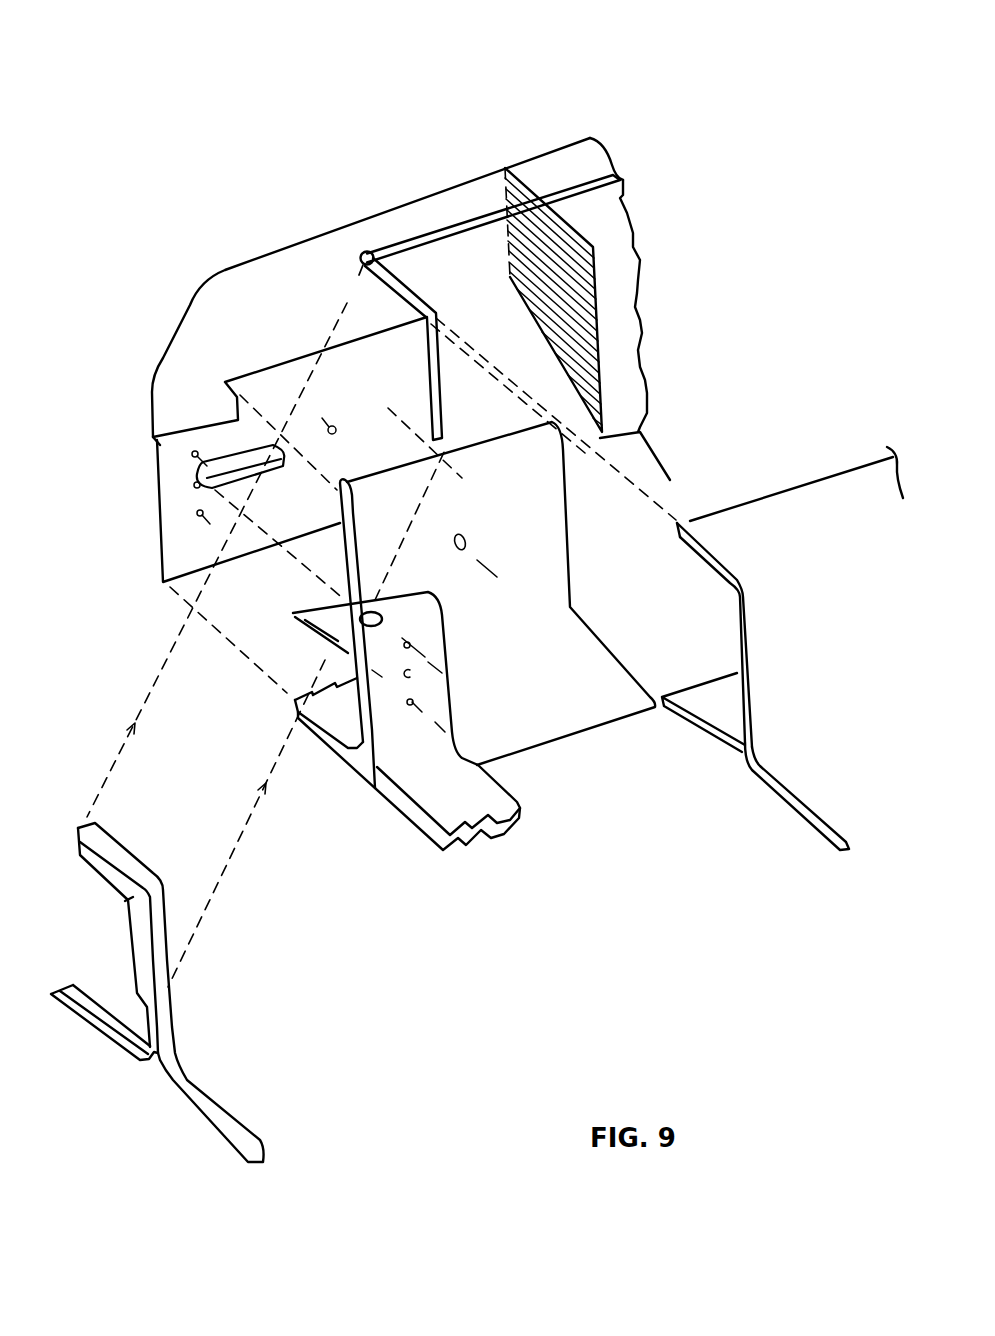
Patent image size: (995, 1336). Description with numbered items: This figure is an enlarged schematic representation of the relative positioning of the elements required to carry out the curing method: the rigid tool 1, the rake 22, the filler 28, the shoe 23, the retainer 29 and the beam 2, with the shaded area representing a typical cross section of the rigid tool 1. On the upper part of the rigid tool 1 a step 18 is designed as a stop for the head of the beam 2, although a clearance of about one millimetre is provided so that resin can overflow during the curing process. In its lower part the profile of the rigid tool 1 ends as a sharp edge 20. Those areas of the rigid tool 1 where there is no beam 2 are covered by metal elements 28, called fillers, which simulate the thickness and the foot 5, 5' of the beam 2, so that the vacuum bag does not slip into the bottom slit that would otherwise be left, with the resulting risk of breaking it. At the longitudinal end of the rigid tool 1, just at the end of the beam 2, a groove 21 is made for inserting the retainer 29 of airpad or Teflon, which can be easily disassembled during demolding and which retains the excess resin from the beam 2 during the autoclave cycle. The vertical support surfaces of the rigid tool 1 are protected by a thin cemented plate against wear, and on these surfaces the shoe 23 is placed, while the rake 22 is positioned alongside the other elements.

The rigid tool 1 is at (310, 247).
The beam 2 is at (755, 523).
The foot of the beam 5 is at (819, 858).
The foot of the beam 5' is at (708, 806).
The step 18 is at (465, 232).
The sharp edge 20 is at (670, 480).
The groove 21 is at (398, 281).
The rake 22 is at (433, 787).
The shoe 23 is at (193, 472).
The metal element (filler) 28 is at (515, 645).
The retainer 29 is at (165, 1060).